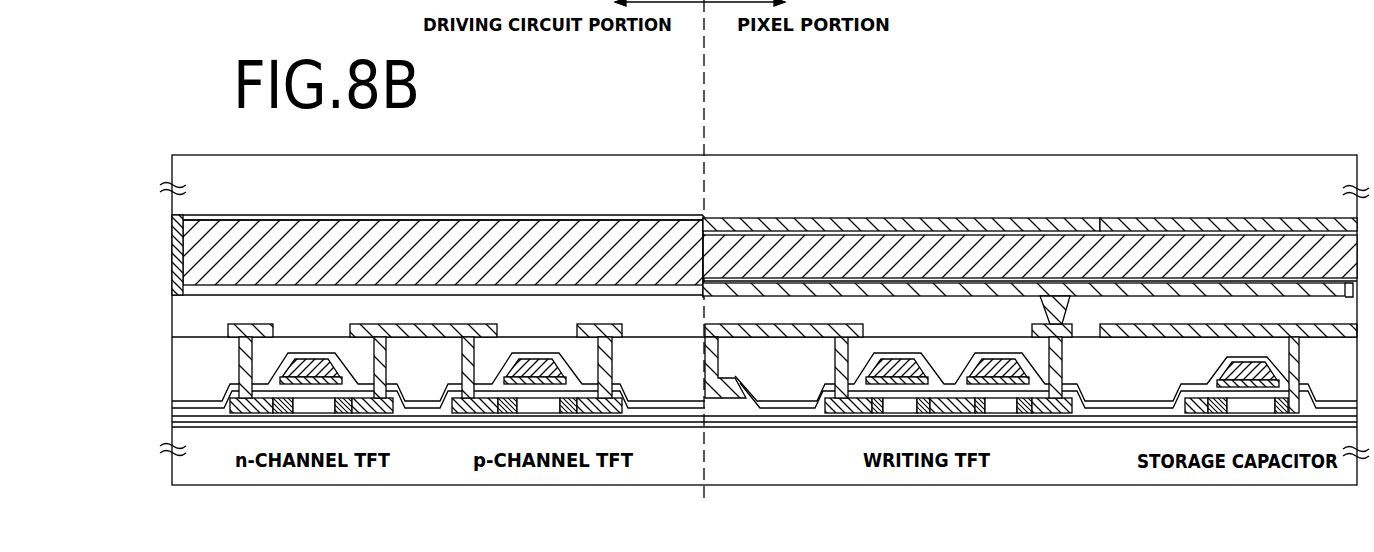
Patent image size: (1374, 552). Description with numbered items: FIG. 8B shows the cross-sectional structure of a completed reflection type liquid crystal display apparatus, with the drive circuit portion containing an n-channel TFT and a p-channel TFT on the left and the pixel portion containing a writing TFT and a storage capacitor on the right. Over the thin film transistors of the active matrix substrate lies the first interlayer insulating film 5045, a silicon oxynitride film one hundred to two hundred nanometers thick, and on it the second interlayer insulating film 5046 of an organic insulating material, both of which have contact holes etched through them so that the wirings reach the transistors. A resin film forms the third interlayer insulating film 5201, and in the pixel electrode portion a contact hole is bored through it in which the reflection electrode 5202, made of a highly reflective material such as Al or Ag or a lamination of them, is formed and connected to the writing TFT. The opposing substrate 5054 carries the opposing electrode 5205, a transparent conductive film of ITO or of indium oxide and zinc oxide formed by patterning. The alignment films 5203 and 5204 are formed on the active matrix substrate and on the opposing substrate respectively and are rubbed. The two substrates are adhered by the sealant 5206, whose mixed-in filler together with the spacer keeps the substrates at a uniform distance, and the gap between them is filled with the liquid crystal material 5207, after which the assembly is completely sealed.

The first interlayer insulating film 5045 is at (728, 372).
The second interlayer insulating film 5046 is at (877, 345).
The opposing substrate 5054 is at (444, 197).
The third interlayer insulating film 5201 is at (987, 320).
The reflection electrode 5202 is at (1090, 292).
The alignment film 5203 is at (377, 284).
The alignment film 5204 is at (540, 215).
The opposing electrode 5205 is at (1278, 222).
The sealant 5206 is at (182, 214).
The liquid crystal material 5207 is at (282, 254).